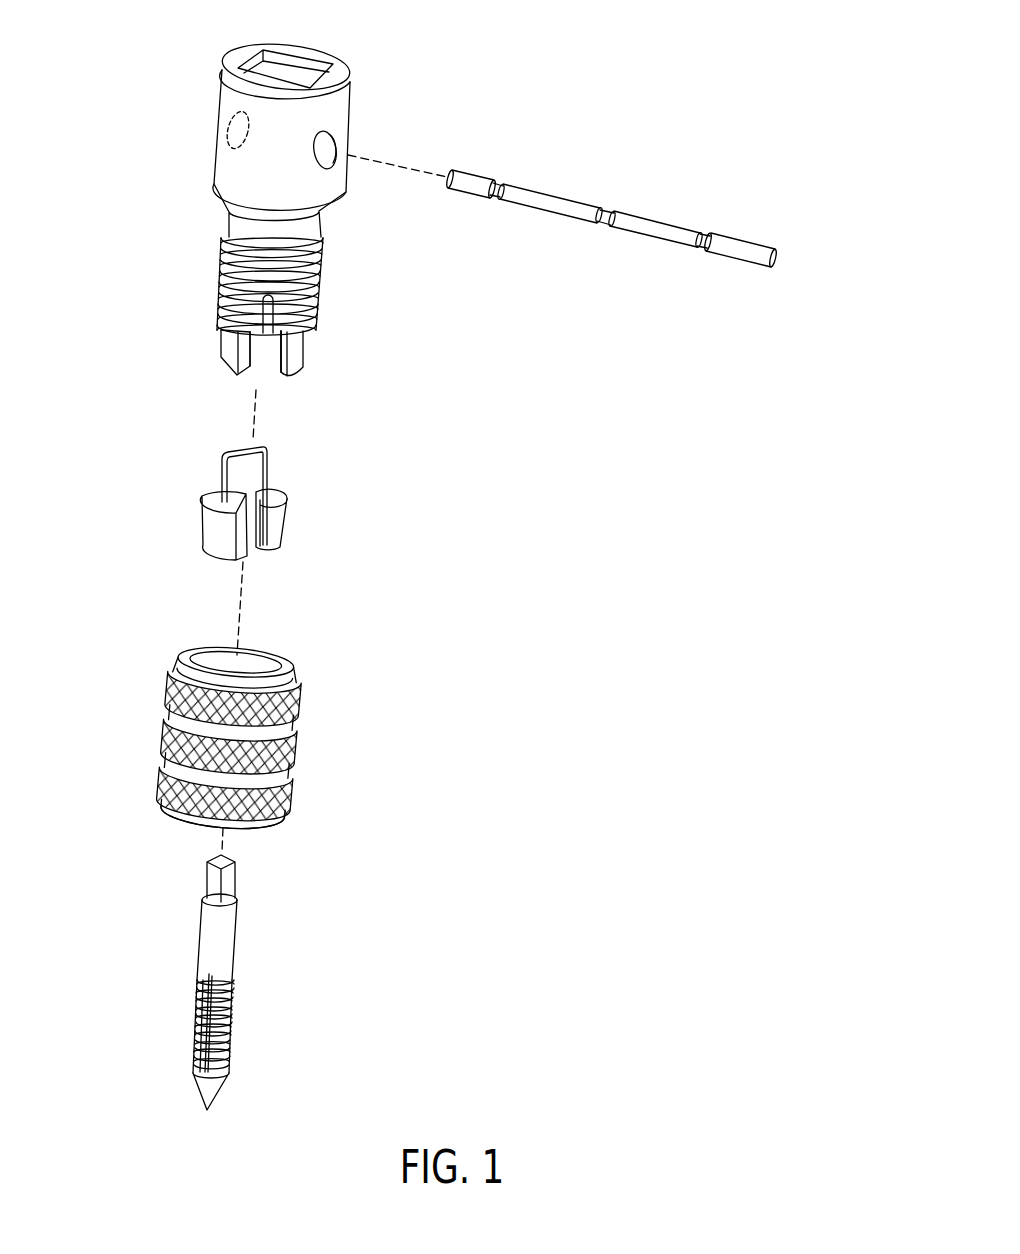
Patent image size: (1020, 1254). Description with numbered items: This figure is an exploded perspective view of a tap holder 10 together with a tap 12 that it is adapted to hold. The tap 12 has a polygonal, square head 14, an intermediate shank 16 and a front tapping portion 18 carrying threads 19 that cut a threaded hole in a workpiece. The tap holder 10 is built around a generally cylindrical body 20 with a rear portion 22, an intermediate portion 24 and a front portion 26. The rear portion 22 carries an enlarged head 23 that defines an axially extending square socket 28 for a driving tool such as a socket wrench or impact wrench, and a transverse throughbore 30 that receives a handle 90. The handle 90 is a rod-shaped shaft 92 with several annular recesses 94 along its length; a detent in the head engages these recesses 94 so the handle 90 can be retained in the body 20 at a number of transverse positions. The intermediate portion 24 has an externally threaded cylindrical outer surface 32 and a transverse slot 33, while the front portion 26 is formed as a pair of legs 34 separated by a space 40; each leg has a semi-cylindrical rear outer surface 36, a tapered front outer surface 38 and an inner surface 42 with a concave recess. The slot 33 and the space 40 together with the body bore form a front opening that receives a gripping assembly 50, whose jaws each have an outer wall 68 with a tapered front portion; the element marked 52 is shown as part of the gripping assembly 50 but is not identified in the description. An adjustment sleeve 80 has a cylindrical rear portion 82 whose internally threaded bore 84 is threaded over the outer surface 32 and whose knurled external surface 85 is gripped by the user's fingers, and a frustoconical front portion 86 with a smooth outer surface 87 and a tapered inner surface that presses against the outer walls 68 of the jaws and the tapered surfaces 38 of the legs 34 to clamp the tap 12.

The tap holder 10 is at (128, 74).
The tap 12 is at (188, 925).
The polygonal head 14 is at (230, 878).
The intermediate shank 16 is at (230, 923).
The front tapping portion 18 is at (233, 1013).
The threads 19 is at (232, 1050).
The cylindrical body 20 is at (192, 172).
The rear portion 22 is at (338, 217).
The enlarged head 23 is at (230, 83).
The intermediate portion 24 is at (222, 270).
The front portion 26 is at (222, 343).
The polygonal socket 28 is at (288, 72).
The transverse throughbore 30 is at (332, 142).
The externally threaded cylindrical outer surface 32 is at (312, 288).
The transverse slot 33 is at (225, 323).
The legs 34 is at (297, 373).
The semi-cylindrical rear outer surface 36 is at (295, 348).
The tapered front outer surface 38 is at (227, 362).
The space between the legs 40 is at (265, 350).
The inner surface 42 is at (265, 360).
The gripping assembly 50 is at (188, 507).
The wire loop 52 is at (252, 462).
The outer wall 68 is at (205, 527).
The adjustment sleeve 80 is at (150, 723).
The cylindrical rear portion 82 is at (299, 727).
The internally threaded bore 84 is at (262, 657).
The knurled external surface 85 is at (299, 696).
The frustoconical front portion 86 is at (280, 802).
The smooth outer surface 87 is at (173, 810).
The handle 90 is at (633, 168).
The rod-shaped shaft 92 is at (540, 210).
The annular recesses 94 is at (487, 197).